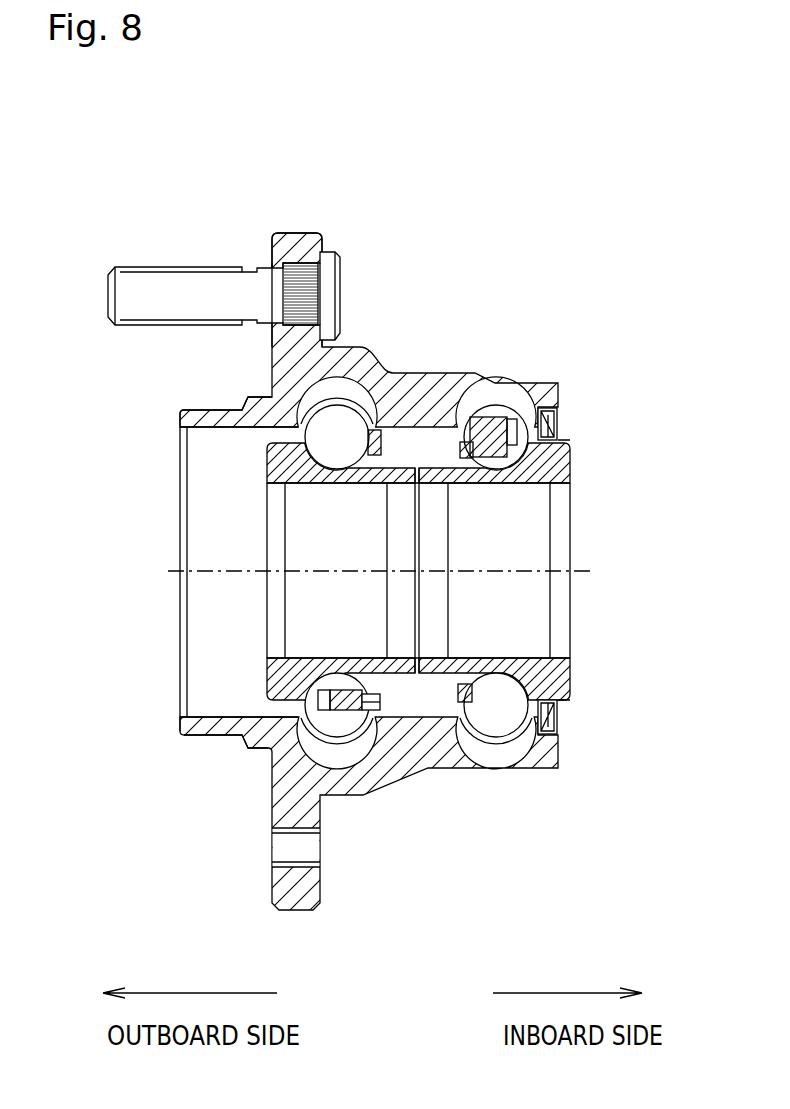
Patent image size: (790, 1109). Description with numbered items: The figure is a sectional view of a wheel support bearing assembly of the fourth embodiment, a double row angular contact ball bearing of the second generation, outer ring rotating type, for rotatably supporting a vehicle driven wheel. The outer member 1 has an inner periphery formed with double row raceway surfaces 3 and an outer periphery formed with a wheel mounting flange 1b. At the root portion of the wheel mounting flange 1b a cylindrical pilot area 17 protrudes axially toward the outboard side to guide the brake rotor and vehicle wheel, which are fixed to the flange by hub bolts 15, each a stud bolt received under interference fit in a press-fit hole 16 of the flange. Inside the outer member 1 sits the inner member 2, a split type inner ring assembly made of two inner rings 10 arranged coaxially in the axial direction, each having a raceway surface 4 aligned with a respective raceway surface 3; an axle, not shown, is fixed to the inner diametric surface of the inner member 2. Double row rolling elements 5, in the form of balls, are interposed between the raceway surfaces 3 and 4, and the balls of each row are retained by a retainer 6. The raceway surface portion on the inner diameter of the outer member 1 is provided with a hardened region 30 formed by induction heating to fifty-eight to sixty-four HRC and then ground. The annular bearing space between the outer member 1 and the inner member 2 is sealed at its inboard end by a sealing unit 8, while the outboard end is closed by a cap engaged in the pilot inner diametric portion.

The outer member 1 is at (452, 370).
The wheel mounting flange 1b is at (297, 237).
The inner member 2 is at (105, 507).
The raceway surfaces 3 is at (298, 773).
The raceway surfaces 4 is at (318, 690).
The rolling elements 5 is at (318, 720).
The retainer 6 is at (420, 670).
The sealing unit 8 is at (560, 435).
The inner rings 10 is at (385, 467).
The hub bolt 15 is at (183, 265).
The press-fit hole 16 is at (283, 280).
The cylindrical pilot area 17 is at (185, 413).
The hardened region 30 is at (372, 398).